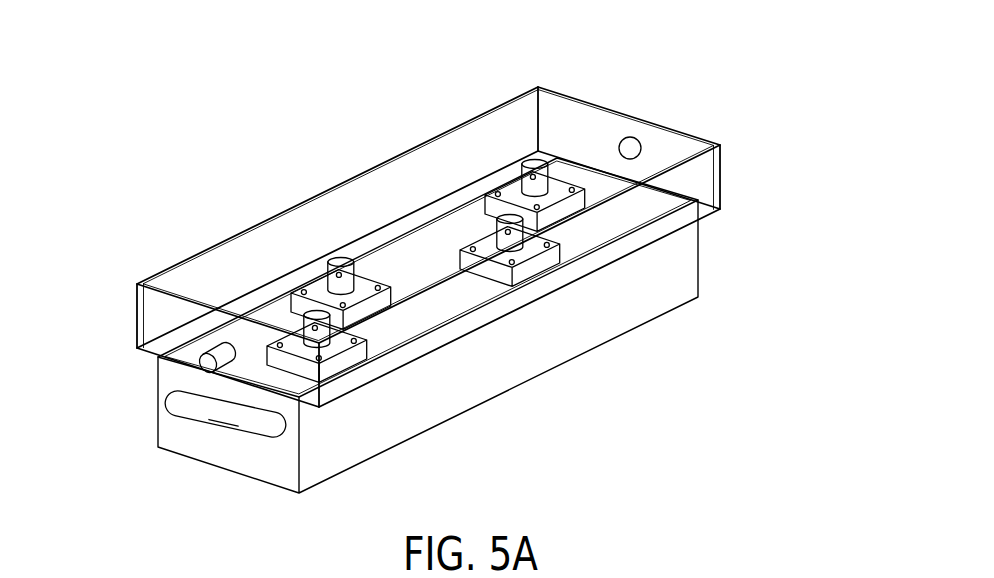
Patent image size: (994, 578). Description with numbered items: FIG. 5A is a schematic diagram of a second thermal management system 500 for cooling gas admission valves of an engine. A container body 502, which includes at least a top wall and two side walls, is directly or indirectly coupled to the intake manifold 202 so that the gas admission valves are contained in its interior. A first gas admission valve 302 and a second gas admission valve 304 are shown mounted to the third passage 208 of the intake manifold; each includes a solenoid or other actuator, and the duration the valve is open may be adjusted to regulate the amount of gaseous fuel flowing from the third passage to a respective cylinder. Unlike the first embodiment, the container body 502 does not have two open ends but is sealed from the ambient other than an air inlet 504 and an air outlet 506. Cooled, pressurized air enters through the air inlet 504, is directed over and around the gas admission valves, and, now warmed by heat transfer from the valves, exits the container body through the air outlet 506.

The second thermal management system 500 is at (753, 52).
The container body 502 is at (452, 245).
The air outlet 506 is at (633, 147).
The intake manifold 202 is at (688, 283).
The third passage 208 is at (225, 413).
The first gas admission valve 302 is at (352, 355).
The second gas admission valve 304 is at (322, 285).
The air inlet 504 is at (208, 364).